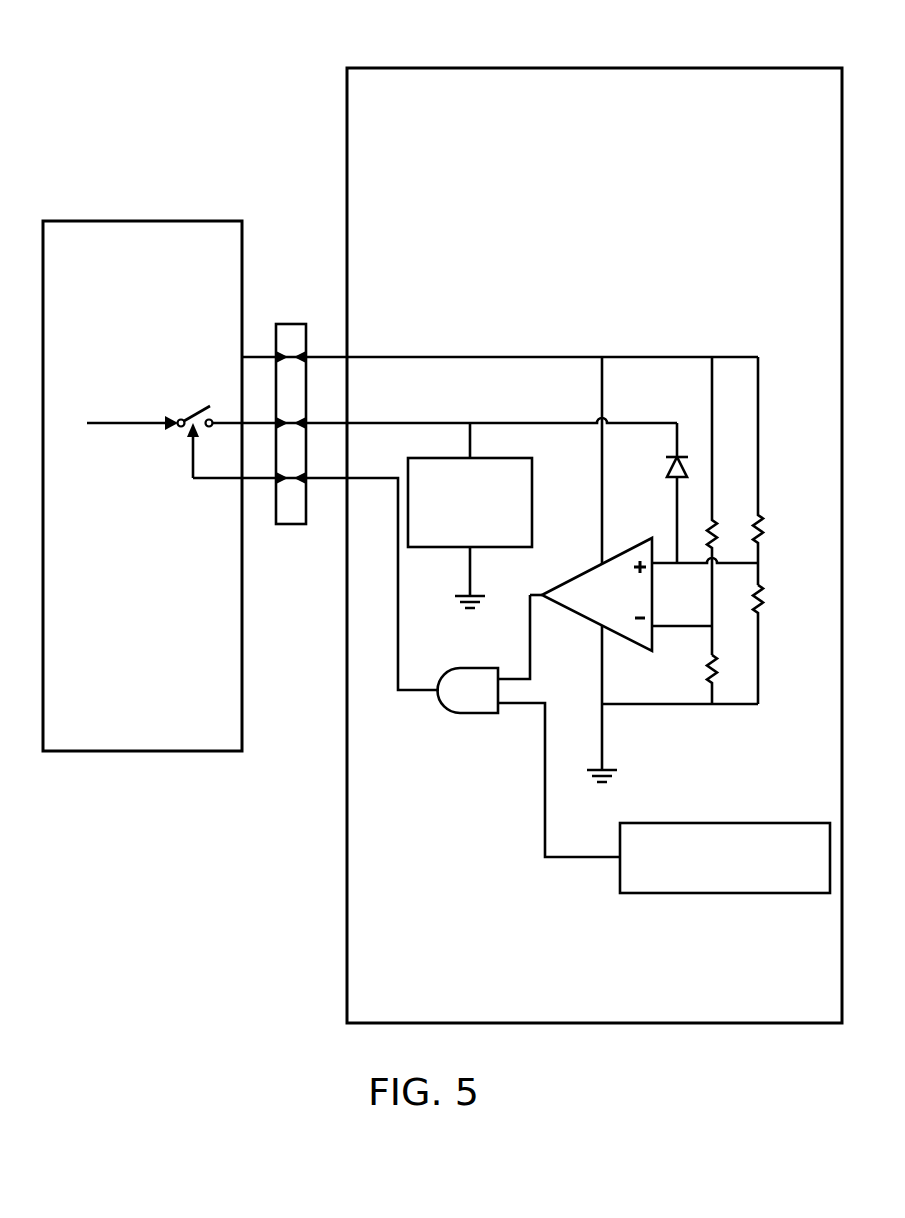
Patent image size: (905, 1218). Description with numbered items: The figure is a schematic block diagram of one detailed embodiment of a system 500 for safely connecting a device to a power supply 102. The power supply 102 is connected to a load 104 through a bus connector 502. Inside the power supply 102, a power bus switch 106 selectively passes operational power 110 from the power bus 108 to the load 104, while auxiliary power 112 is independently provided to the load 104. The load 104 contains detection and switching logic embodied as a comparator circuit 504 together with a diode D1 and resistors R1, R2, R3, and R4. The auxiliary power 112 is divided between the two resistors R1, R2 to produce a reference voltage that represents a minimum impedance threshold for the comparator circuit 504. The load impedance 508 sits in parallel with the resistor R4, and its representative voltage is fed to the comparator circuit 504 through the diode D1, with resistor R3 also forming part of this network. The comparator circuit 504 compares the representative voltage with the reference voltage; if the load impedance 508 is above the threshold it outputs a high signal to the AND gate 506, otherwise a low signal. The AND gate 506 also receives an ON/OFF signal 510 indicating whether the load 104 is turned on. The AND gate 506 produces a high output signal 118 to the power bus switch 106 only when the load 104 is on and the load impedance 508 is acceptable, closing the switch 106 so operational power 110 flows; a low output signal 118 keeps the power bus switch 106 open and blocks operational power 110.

The system 500 is at (185, 52).
The power supply 102 is at (142, 486).
The load 104 is at (594, 545).
The power bus switch 106 is at (179, 428).
The power bus 108 is at (121, 423).
The operational power 110 is at (411, 423).
The auxiliary power 112 is at (471, 357).
The output signal 118 is at (398, 626).
The bus connector 502 is at (296, 324).
The comparator circuit 504 is at (600, 569).
The AND gate 506 is at (470, 713).
The load impedance 508 is at (470, 515).
The ON/OFF signal 510 is at (725, 858).
The diode D1 is at (665, 493).
The resistor R1 is at (725, 506).
The resistor R2 is at (726, 677).
The resistor R3 is at (772, 471).
The resistor R4 is at (772, 644).